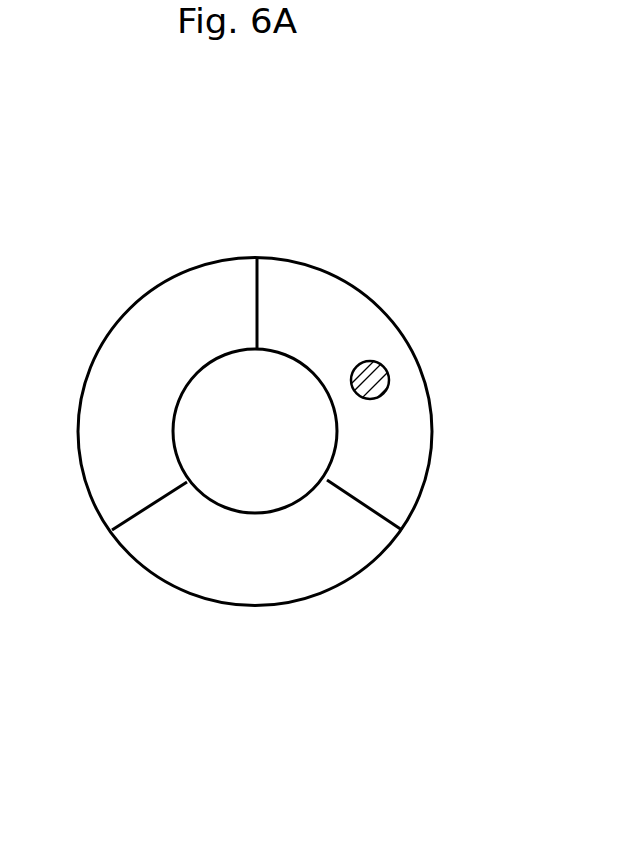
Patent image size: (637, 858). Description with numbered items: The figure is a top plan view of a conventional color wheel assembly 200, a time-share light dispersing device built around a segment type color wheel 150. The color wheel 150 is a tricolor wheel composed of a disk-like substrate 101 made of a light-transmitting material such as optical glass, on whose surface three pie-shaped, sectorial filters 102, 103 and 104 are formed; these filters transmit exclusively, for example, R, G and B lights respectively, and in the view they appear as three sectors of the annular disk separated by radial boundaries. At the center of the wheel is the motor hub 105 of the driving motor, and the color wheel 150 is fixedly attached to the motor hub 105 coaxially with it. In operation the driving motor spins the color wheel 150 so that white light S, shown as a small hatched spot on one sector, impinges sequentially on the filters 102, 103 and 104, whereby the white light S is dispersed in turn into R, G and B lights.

The color wheel assembly 200 is at (180, 695).
The substrate 101 is at (142, 567).
The filter 102 is at (398, 467).
The filter 103 is at (302, 577).
The filter 104 is at (167, 325).
The motor hub 105 is at (272, 383).
The color wheel 150 is at (382, 305).
The white light S is at (389, 369).